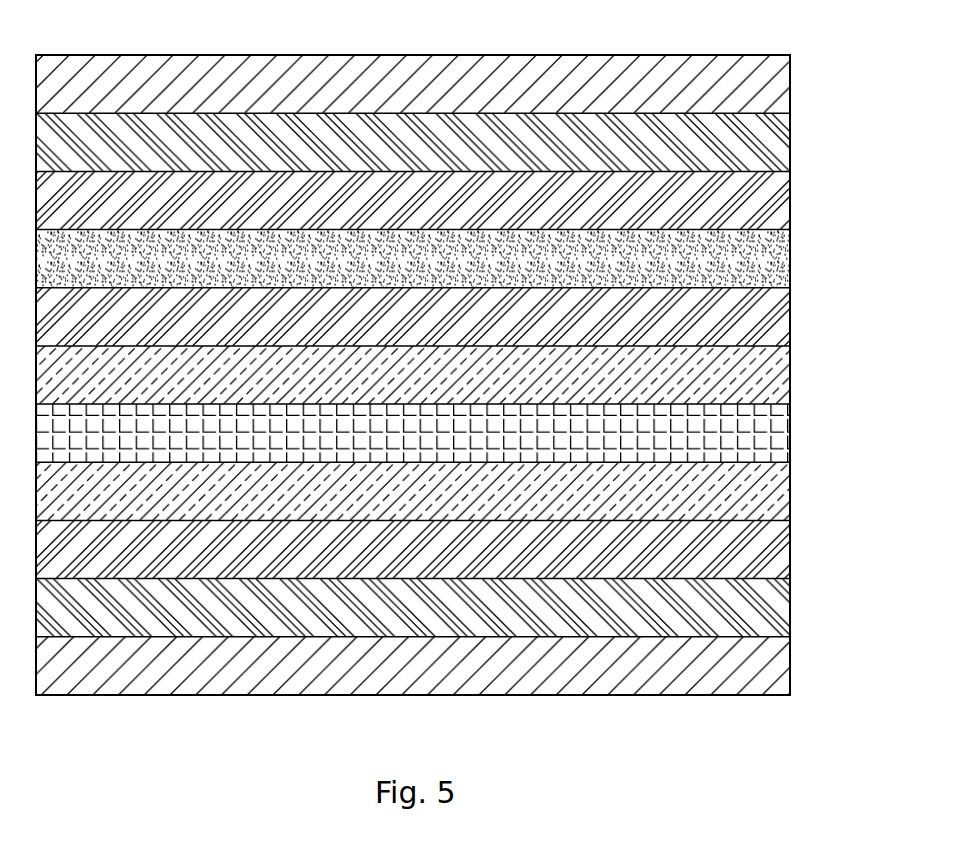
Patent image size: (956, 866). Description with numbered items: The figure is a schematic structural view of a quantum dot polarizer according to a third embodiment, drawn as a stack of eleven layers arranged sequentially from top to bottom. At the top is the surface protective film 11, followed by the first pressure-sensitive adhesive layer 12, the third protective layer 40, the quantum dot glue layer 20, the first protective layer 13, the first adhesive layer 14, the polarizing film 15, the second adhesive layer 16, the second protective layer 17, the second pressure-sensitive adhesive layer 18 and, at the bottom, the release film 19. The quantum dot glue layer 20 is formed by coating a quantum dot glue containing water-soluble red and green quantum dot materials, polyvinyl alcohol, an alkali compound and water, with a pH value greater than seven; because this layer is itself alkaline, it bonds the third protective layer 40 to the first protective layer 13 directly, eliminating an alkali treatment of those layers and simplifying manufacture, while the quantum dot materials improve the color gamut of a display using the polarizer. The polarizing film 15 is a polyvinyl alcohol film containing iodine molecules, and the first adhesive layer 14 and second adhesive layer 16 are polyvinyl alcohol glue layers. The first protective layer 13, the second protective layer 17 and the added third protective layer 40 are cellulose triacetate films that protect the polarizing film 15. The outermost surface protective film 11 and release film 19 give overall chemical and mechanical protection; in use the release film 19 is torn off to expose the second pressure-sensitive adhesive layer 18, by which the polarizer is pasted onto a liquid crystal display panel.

The surface protective film 11 is at (779, 86).
The first pressure-sensitive adhesive layer 12 is at (779, 144).
The third protective layer 40 is at (779, 202).
The quantum dot glue layer 20 is at (779, 260).
The first protective layer 13 is at (779, 318).
The first adhesive layer 14 is at (779, 376).
The polarizing film 15 is at (779, 434).
The second adhesive layer 16 is at (779, 492).
The second protective layer 17 is at (779, 550).
The second pressure-sensitive adhesive layer 18 is at (779, 608).
The release film 19 is at (779, 666).